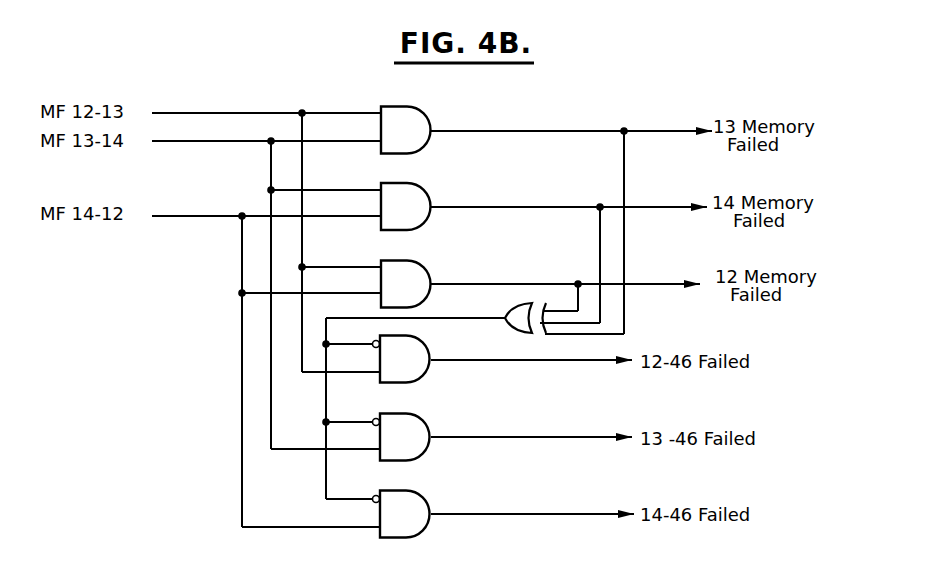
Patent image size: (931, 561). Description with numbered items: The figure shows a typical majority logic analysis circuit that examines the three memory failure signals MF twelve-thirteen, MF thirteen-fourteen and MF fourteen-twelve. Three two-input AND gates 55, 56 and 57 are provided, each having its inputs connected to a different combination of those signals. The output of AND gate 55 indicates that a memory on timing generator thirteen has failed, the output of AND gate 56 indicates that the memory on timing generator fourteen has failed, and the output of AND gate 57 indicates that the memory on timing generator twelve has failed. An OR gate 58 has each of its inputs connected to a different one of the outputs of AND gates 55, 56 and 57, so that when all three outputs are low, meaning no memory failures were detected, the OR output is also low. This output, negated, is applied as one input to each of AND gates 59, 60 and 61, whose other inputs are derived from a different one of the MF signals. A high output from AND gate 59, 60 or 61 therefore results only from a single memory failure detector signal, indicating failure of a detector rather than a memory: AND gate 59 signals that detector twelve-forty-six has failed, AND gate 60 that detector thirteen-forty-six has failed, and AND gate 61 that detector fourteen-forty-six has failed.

The AND gate 55 is at (406, 130).
The AND gate 56 is at (405, 206).
The AND gate 57 is at (406, 284).
The OR gate 58 is at (512, 313).
The AND gate 59 is at (405, 359).
The AND gate 60 is at (405, 437).
The AND gate 61 is at (405, 514).